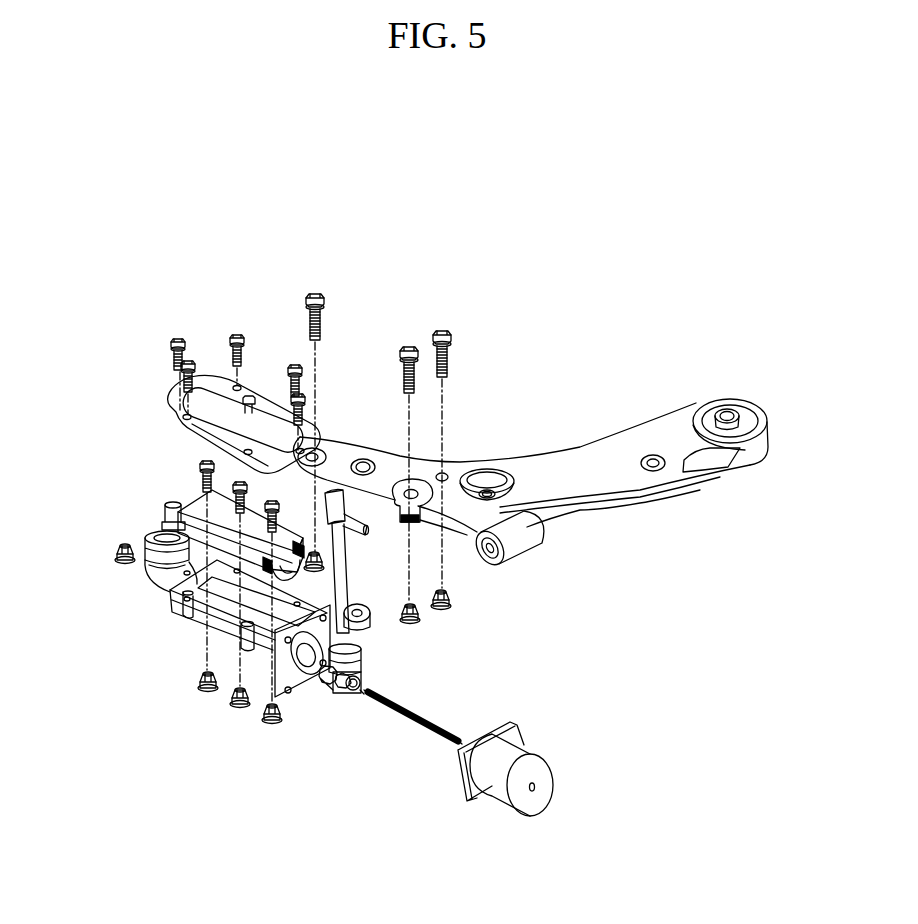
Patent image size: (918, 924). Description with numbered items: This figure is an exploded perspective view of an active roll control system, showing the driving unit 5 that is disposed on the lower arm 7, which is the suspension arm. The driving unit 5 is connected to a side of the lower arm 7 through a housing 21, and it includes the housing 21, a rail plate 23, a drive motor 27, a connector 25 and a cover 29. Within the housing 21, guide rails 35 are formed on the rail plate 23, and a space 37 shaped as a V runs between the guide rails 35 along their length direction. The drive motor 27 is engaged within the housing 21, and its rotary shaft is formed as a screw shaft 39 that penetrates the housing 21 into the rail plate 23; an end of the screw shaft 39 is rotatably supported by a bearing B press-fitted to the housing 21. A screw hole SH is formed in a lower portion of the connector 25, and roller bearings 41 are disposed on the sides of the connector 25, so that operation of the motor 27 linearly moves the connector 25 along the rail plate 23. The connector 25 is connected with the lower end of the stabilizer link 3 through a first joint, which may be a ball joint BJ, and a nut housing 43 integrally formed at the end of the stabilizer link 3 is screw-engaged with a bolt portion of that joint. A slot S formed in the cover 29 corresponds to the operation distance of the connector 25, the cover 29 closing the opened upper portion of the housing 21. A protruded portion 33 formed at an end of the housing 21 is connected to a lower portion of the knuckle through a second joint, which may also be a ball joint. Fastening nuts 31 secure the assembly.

The driving unit 5 is at (205, 629).
The lower arm 7 is at (567, 473).
The housing 21 is at (207, 617).
The rail plate 23 is at (293, 561).
The connector 25 is at (366, 672).
The drive motor 27 is at (530, 806).
The cover 29 is at (207, 424).
The fastening nuts 31 is at (370, 627).
The protruded portion 33 is at (152, 568).
The guide rails 35 is at (274, 556).
The space 37 is at (223, 510).
The screw shaft 39 is at (415, 722).
The roller bearings 41 is at (331, 691).
The nut housing 43 is at (322, 686).
The slot S is at (211, 396).
The bearing B is at (117, 552).
The stabilizer link 3 is at (348, 597).
The ball joint BJ is at (365, 505).
The screw hole SH is at (360, 706).